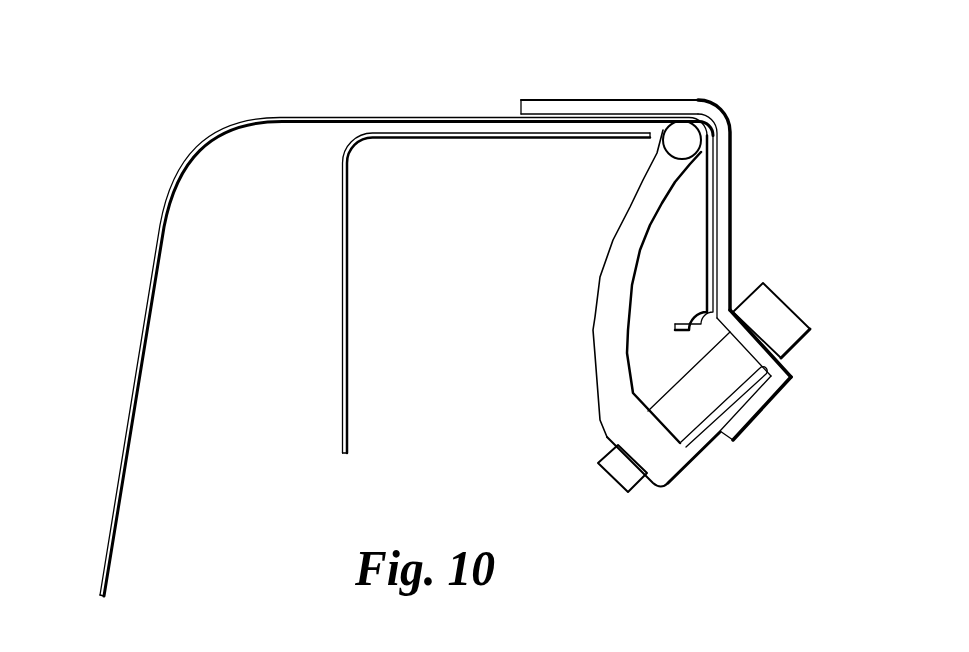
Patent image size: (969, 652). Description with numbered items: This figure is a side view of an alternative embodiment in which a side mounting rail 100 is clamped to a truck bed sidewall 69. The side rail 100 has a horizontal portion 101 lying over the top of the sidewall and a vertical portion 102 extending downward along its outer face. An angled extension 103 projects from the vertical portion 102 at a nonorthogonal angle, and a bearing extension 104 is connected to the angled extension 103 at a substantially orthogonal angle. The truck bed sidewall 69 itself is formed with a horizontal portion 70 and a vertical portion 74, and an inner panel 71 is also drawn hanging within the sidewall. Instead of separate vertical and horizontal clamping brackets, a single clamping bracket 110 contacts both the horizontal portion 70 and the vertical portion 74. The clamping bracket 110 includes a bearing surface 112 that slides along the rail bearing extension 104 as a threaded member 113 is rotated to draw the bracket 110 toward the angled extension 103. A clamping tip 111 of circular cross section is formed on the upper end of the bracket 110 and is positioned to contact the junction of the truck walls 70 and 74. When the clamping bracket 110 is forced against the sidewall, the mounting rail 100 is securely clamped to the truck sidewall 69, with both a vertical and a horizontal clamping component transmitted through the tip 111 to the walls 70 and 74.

The truck bed sidewall 69 is at (115, 395).
The horizontal portion of truck bed sidewall 70 is at (290, 118).
The inner panel 71 is at (431, 138).
The vertical portion of truck bed sidewall 74 is at (710, 223).
The side mounting rail 100 is at (750, 194).
The horizontal portion 101 is at (572, 100).
The vertical portion 102 is at (732, 168).
The angled extension 103 is at (785, 360).
The bearing extension 104 is at (767, 407).
The clamping bracket 110 is at (608, 290).
The clamping tip 111 is at (680, 138).
The bearing surface 112 is at (707, 453).
The threaded member 113 is at (778, 317).